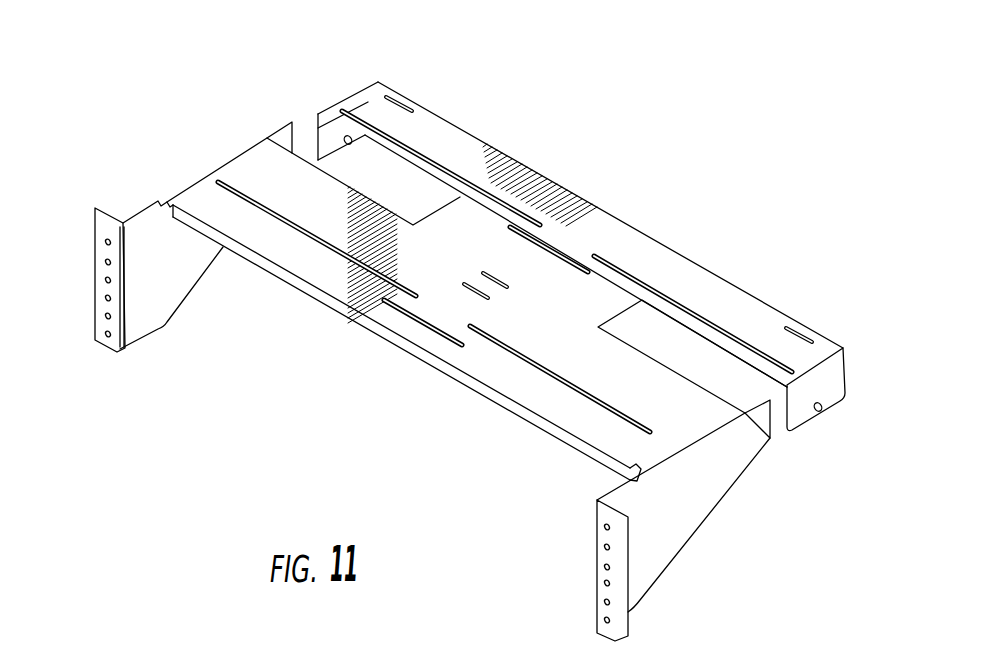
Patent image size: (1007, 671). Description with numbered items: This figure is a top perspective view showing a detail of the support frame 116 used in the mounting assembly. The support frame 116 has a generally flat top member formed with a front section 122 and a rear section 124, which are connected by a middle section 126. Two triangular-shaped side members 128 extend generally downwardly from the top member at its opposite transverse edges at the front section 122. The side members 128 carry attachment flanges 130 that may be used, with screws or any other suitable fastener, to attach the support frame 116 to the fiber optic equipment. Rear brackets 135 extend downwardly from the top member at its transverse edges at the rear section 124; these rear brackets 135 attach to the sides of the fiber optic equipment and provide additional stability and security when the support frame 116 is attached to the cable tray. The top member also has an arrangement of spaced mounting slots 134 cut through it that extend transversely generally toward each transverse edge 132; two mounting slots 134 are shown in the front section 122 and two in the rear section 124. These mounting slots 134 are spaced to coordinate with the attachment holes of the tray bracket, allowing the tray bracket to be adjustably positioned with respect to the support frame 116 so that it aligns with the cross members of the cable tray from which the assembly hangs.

The support frame 116 is at (217, 393).
The front section 122 is at (307, 293).
The rear section 124 is at (447, 115).
The middle section 126 is at (628, 312).
The side members 128 is at (145, 207).
The attachment flanges 130 is at (243, 150).
The transverse edge 132 is at (93, 335).
The mounting slots 134 is at (371, 125).
The rear brackets 135 is at (317, 133).